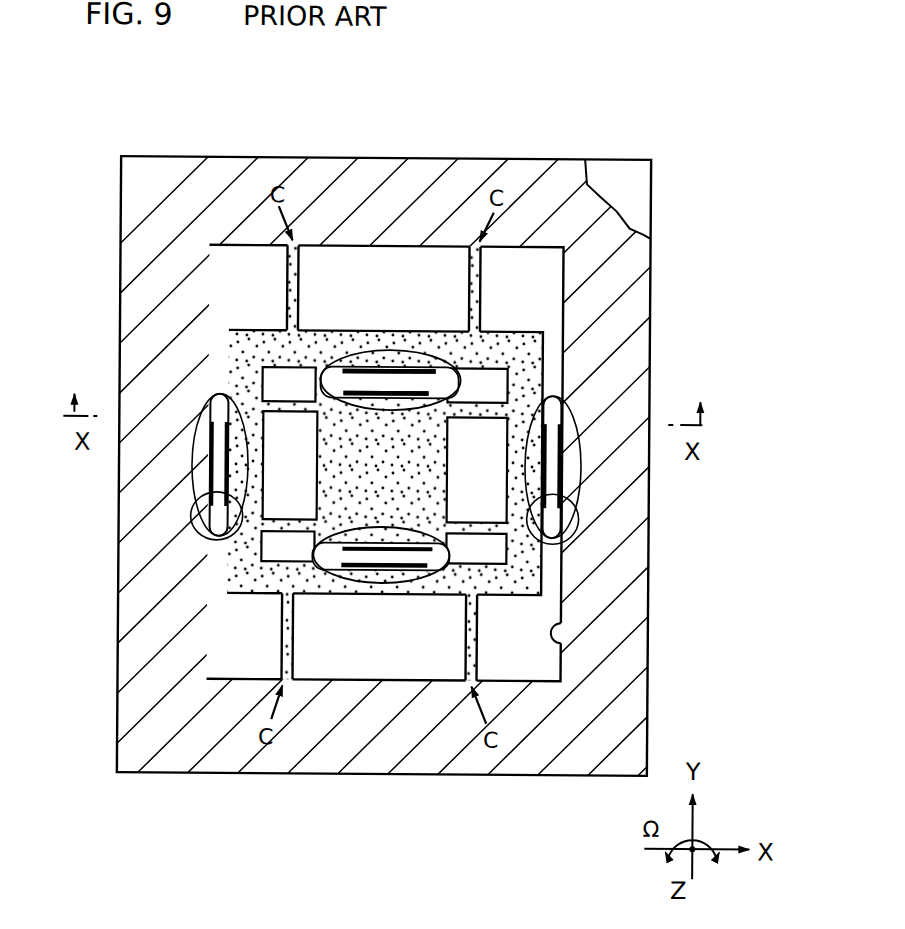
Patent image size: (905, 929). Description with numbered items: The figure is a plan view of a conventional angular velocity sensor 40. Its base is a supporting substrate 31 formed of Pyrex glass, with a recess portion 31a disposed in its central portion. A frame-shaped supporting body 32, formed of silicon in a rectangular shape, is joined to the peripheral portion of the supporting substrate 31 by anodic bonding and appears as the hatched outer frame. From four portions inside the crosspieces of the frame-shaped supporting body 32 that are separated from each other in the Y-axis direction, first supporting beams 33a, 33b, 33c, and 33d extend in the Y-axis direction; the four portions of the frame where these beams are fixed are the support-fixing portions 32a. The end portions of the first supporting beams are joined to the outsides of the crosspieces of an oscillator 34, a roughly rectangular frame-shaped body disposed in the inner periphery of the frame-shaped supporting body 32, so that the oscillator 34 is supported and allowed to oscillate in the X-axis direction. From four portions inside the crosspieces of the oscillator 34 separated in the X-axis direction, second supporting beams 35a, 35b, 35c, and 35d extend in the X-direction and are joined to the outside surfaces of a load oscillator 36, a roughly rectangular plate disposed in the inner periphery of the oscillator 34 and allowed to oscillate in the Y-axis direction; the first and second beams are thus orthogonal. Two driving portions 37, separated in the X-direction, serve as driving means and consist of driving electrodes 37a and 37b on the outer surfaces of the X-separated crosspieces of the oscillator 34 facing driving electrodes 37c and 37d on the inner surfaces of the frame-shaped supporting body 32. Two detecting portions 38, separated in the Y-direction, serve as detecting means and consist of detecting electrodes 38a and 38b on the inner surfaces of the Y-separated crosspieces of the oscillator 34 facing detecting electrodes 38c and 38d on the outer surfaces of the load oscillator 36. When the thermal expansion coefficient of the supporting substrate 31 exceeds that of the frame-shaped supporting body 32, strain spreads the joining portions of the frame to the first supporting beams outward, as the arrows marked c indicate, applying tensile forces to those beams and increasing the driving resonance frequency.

The angular velocity sensor 40 is at (617, 155).
The supporting substrate 31 is at (637, 200).
The recess portion 31a is at (560, 640).
The frame-shaped supporting body 32 is at (452, 466).
The support-fixing portion 32a is at (294, 244).
The first supporting beam 33a is at (285, 280).
The first supporting beam 33b is at (479, 287).
The first supporting beam 33c is at (478, 637).
The first supporting beam 33d is at (283, 645).
The oscillator 34 is at (242, 341).
The second supporting beam 35a is at (483, 383).
The second supporting beam 35b is at (445, 575).
The second supporting beam 35c is at (267, 555).
The second supporting beam 35d is at (295, 403).
The load oscillator 36 is at (422, 438).
The driving portion 37 is at (192, 460).
The driving electrode 37a is at (245, 545).
The driving electrode 37b is at (490, 537).
The driving electrode 37c is at (205, 495).
The driving electrode 37d is at (560, 498).
The detecting portion 38 is at (423, 348).
The detecting electrode 38a is at (377, 367).
The detecting electrode 38b is at (381, 568).
The detecting electrode 38c is at (340, 392).
The detecting electrode 38d is at (436, 568).